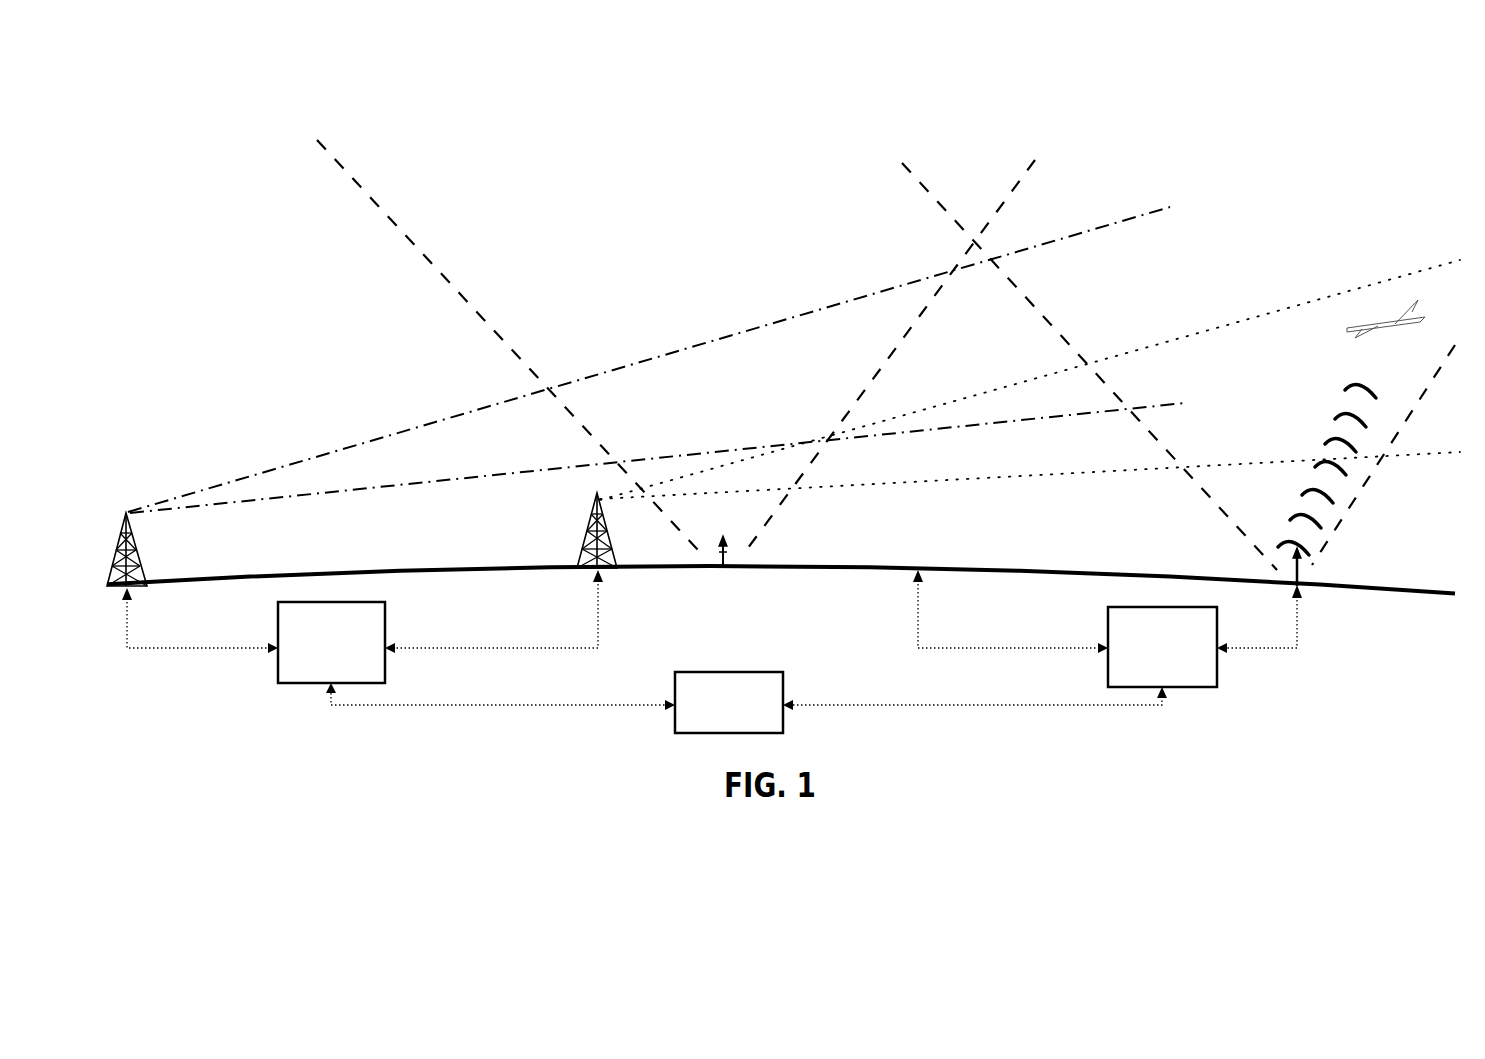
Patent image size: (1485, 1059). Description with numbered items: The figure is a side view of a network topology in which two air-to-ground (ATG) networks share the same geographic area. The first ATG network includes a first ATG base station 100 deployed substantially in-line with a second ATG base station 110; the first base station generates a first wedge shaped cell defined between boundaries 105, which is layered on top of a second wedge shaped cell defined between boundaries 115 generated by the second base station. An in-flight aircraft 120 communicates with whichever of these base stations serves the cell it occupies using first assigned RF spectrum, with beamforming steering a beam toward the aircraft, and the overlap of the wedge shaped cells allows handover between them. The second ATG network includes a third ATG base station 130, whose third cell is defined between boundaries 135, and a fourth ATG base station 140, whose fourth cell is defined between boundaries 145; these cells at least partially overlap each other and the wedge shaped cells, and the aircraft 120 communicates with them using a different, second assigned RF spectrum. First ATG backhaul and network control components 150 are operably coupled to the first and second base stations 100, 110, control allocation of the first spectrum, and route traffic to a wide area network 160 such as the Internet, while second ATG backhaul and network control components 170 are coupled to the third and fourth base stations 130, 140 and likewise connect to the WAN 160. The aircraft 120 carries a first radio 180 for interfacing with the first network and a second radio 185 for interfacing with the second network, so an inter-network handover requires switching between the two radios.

The first ATG base station 100 is at (582, 553).
The boundaries of first wedge shaped cell 105 is at (935, 405).
The second ATG base station 110 is at (138, 563).
The boundaries of second wedge shaped cell 115 is at (337, 452).
The aircraft 120 is at (1377, 295).
The third ATG base station 130 is at (1290, 553).
The boundaries of third cell 135 is at (902, 163).
The fourth ATG base station 140 is at (730, 562).
The boundaries of fourth cell 145 is at (443, 277).
The first ATG backhaul and network control components 150 is at (277, 677).
The wide area network (WAN) 160 is at (728, 672).
The second ATG backhaul and network control components 170 is at (1217, 675).
The first radio 180 is at (1362, 328).
The second radio 185 is at (1410, 312).